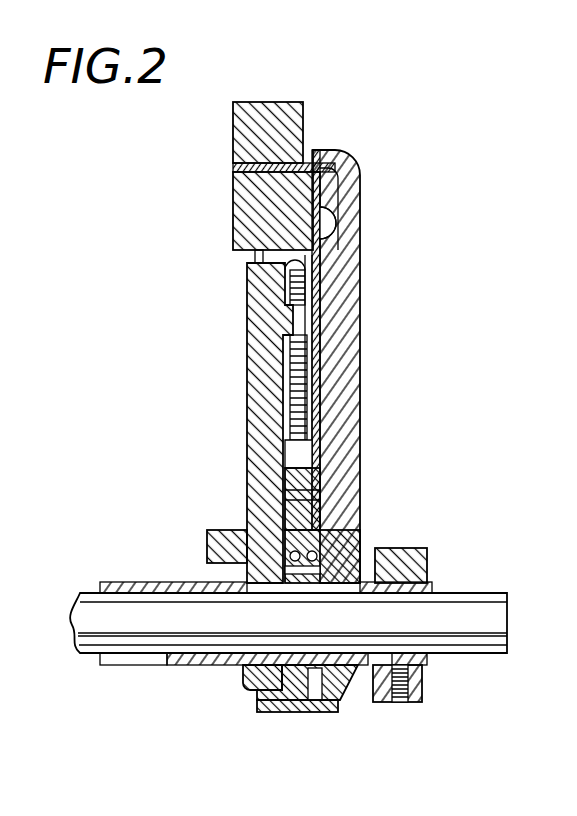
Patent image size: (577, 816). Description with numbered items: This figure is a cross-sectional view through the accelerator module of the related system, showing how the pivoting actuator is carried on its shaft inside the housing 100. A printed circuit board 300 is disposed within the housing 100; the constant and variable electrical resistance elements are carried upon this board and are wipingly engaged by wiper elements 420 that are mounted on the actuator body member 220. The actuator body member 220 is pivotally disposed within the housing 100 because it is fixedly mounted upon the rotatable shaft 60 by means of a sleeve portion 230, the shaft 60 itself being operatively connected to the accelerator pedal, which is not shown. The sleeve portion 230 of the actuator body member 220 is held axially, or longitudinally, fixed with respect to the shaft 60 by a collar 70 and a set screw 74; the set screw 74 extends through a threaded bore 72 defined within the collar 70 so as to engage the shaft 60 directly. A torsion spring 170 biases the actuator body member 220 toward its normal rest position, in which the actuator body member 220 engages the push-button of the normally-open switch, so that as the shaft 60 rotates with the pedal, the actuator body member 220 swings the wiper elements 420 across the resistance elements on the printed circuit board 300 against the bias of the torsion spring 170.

The rotatable shaft 60 is at (97, 617).
The collar 70 is at (425, 684).
The threaded bore 72 is at (403, 703).
The set screw 74 is at (428, 659).
The housing 100 is at (356, 168).
The torsion spring 170 is at (340, 545).
The actuator body member 220 is at (260, 372).
The sleeve portion 230 is at (137, 582).
The printed circuit board 300 is at (320, 150).
The wiper elements 420 is at (262, 276).